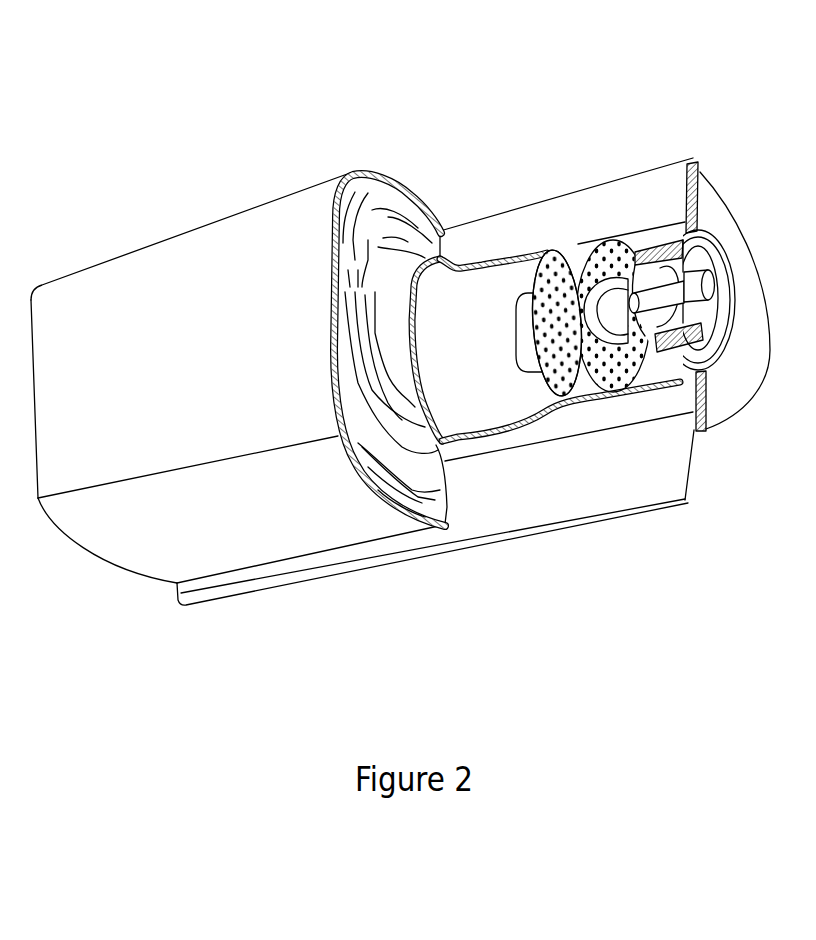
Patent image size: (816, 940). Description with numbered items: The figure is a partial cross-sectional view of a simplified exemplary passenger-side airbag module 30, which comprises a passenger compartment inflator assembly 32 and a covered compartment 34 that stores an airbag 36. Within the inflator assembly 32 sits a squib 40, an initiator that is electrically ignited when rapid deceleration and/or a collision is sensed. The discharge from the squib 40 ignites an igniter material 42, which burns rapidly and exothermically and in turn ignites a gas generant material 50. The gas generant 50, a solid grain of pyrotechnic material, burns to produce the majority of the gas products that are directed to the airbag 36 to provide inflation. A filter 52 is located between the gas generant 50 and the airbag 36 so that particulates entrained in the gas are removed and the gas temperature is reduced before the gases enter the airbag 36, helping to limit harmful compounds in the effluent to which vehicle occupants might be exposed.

The airbag module 30 is at (468, 146).
The passenger compartment inflator assembly 32 is at (653, 224).
The covered compartment 34 is at (117, 265).
The airbag 36 is at (428, 494).
The squib 40 is at (711, 288).
The igniter material 42 is at (622, 317).
The gas generant material 50 is at (682, 341).
The filter 52 is at (575, 250).